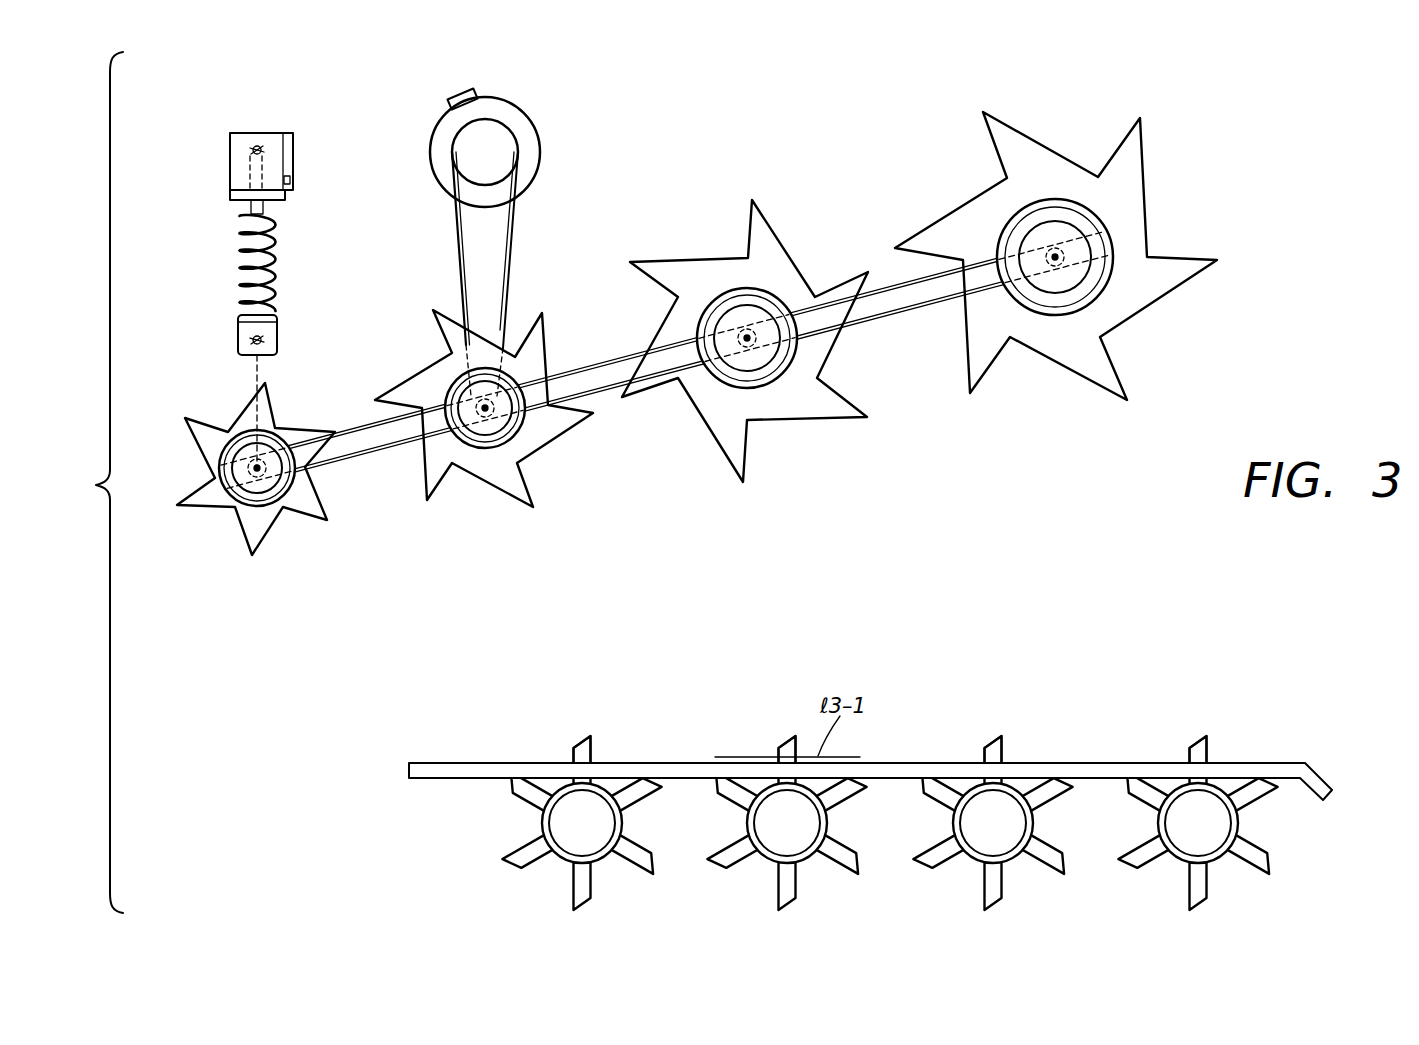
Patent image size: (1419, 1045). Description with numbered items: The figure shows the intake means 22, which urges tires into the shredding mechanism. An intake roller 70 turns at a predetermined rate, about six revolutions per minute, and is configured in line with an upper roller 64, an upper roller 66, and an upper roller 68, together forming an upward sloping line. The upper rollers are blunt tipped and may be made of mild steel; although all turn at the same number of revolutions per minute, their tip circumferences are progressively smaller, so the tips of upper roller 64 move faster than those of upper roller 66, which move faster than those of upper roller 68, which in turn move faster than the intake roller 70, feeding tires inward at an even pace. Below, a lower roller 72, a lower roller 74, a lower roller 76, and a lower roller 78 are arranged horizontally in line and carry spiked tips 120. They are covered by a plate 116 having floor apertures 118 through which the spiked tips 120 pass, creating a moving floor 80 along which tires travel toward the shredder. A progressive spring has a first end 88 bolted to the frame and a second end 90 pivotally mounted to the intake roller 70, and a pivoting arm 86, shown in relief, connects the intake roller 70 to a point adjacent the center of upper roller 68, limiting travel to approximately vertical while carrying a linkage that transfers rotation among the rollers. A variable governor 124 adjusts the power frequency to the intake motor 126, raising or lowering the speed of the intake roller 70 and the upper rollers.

The intake means 22 is at (348, 660).
The upper roller 64 is at (1056, 256).
The upper roller 66 is at (745, 341).
The upper roller 68 is at (484, 408).
The intake roller 70 is at (256, 469).
The lower roller 72 is at (1212, 833).
The lower roller 74 is at (1000, 833).
The lower roller 76 is at (795, 833).
The lower roller 78 is at (567, 832).
The moving floor 80 is at (882, 762).
The pivoting arm 86 is at (376, 460).
The first end 88 is at (258, 147).
The second end 90 is at (256, 341).
The plate 116 is at (1076, 760).
The floor apertures 118 is at (573, 758).
The spiked tips 120 is at (590, 746).
The variable governor 124 is at (448, 97).
The intake motor 126 is at (534, 122).